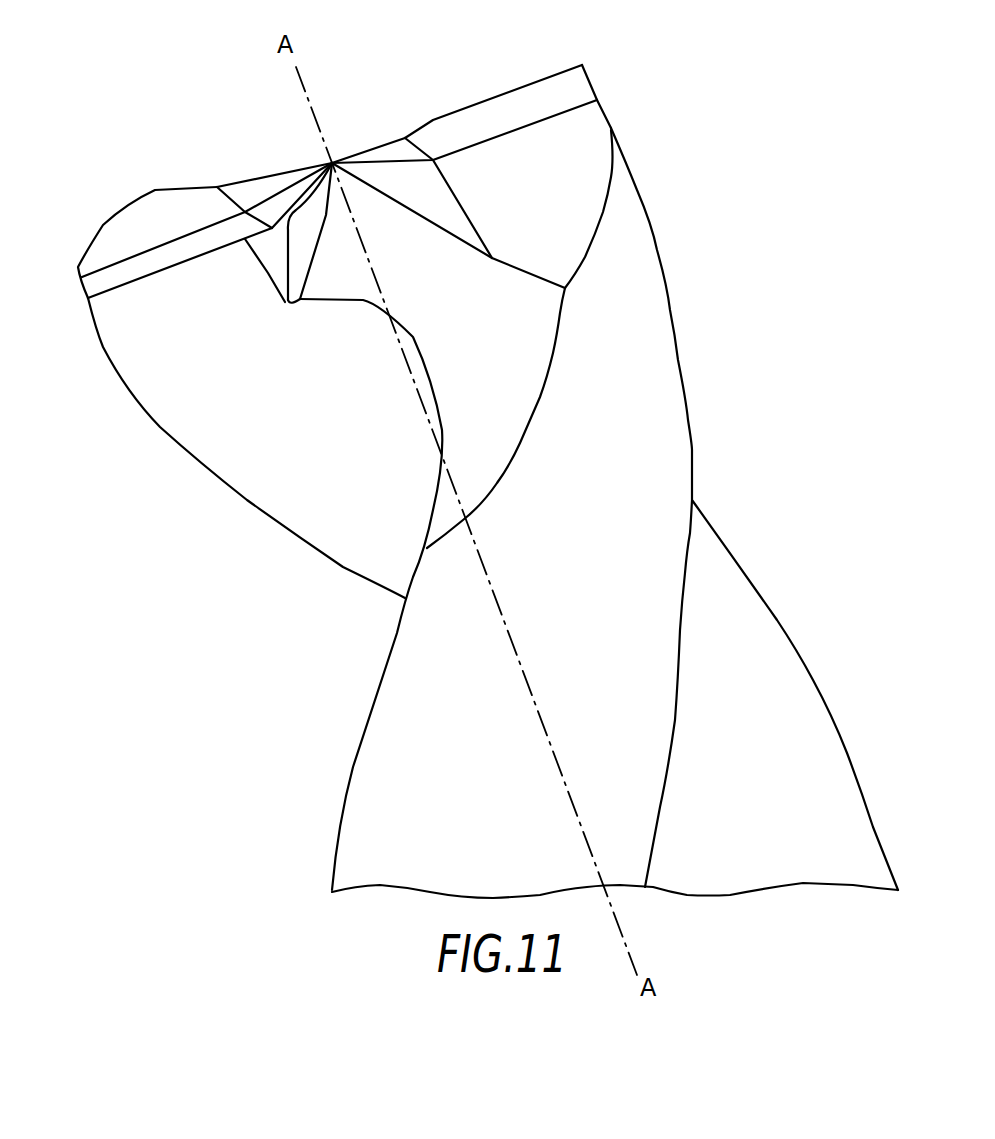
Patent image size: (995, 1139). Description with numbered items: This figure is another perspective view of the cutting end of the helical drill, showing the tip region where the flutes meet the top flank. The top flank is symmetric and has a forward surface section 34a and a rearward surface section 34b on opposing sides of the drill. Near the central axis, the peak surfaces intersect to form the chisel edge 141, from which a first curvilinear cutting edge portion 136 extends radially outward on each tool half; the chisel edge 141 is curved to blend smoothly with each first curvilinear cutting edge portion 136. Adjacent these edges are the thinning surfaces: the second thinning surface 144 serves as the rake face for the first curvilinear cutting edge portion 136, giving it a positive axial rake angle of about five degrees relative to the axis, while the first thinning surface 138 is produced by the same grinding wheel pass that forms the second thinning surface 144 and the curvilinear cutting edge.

The forward surface section 34a is at (93, 285).
The rearward surface section 34b is at (127, 215).
The first curvilinear cutting edge portion 136 is at (374, 142).
The first thinning surface 138 is at (536, 347).
The chisel edge 141 is at (333, 148).
The second thinning surface 144 is at (270, 258).